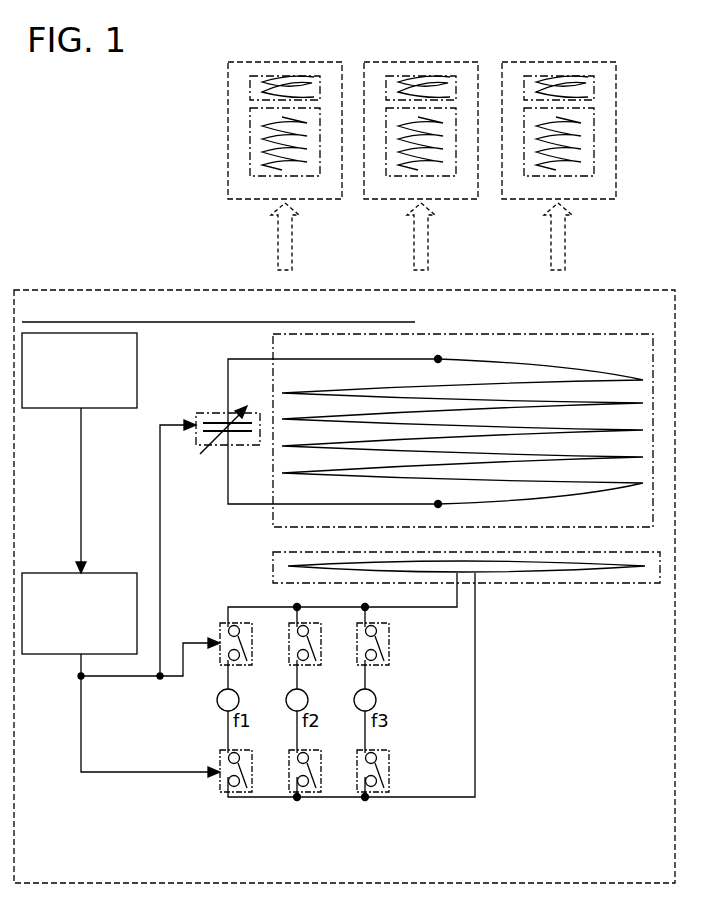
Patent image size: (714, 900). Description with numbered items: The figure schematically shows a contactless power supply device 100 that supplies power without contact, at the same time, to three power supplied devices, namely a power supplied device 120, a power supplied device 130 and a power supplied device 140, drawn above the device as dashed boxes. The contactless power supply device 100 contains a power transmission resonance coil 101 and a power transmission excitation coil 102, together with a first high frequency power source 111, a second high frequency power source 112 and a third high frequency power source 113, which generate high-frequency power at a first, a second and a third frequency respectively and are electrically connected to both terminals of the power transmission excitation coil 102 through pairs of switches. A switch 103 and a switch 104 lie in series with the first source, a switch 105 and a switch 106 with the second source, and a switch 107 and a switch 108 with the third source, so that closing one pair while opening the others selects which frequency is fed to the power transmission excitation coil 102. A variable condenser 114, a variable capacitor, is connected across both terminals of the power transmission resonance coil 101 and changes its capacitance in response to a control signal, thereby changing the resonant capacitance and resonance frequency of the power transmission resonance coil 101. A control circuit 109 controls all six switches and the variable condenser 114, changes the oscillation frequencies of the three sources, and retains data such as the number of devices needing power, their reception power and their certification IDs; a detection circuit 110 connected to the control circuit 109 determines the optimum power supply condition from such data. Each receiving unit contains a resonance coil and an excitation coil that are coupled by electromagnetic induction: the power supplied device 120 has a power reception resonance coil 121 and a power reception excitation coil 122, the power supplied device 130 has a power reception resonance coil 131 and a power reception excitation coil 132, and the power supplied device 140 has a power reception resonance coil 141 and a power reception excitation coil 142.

The contactless power supply device 100 is at (218, 312).
The power transmission resonance coil 101 is at (622, 290).
The power transmission excitation coil 102 is at (646, 583).
The switch 103 is at (250, 660).
The switch 104 is at (240, 797).
The switch 105 is at (318, 660).
The switch 106 is at (310, 797).
The switch 107 is at (390, 660).
The switch 108 is at (378, 797).
The control circuit 109 is at (79, 613).
The detection circuit 110 is at (79, 370).
The first high frequency power source 111 is at (220, 712).
The second high frequency power source 112 is at (289, 712).
The third high frequency power source 113 is at (357, 712).
The variable condenser 114 is at (200, 411).
The power supplied device 120 is at (286, 63).
The power reception resonance coil 121 is at (302, 177).
The power reception excitation coil 122 is at (315, 78).
The power supplied device 130 is at (422, 63).
The power reception resonance coil 131 is at (438, 177).
The power reception excitation coil 132 is at (451, 78).
The power supplied device 140 is at (560, 63).
The power reception resonance coil 141 is at (582, 177).
The power reception excitation coil 142 is at (589, 78).